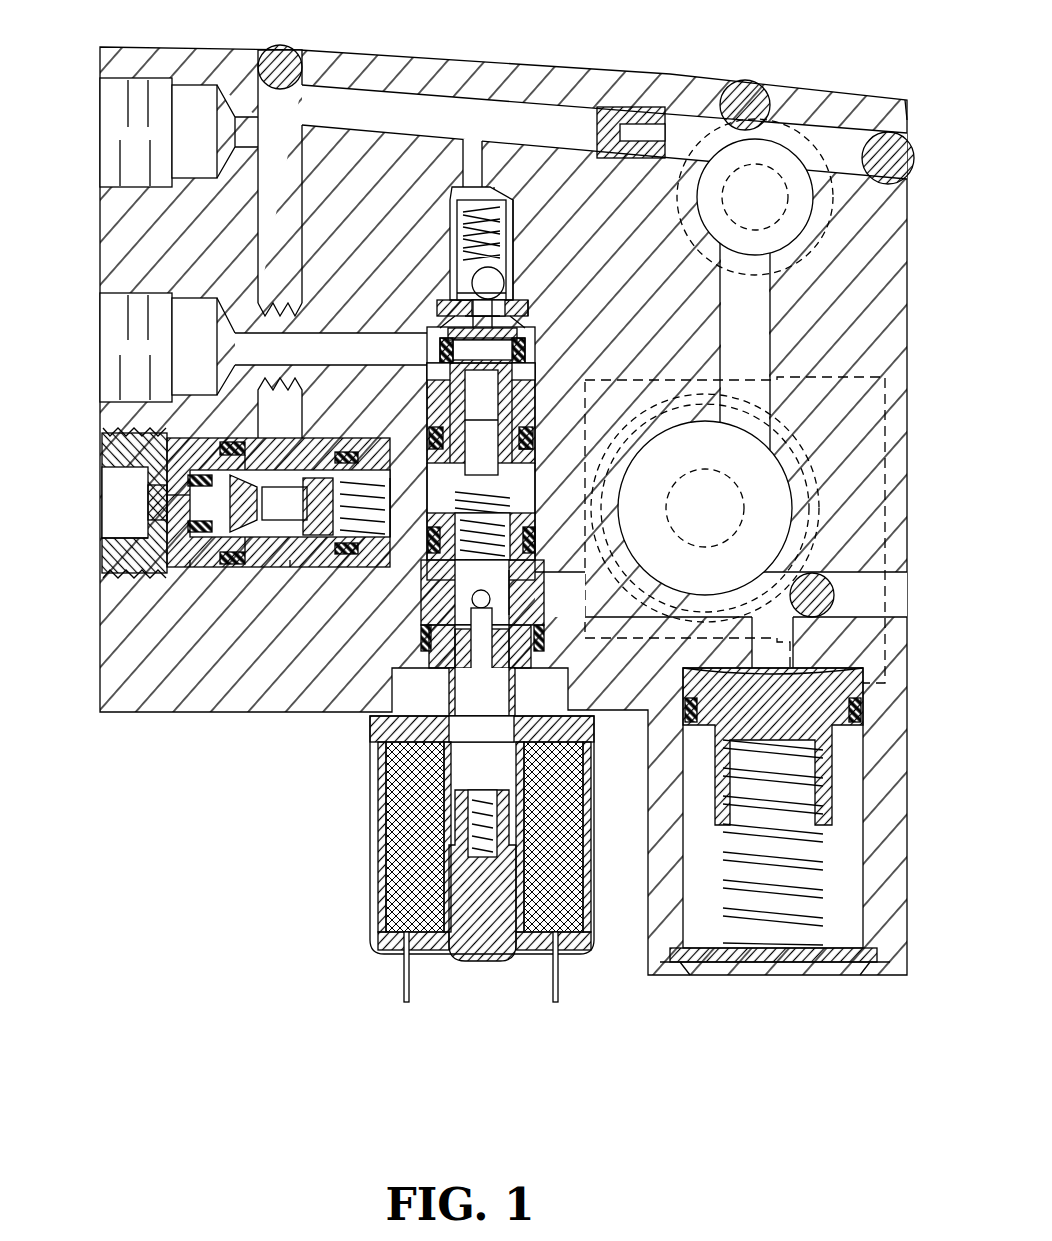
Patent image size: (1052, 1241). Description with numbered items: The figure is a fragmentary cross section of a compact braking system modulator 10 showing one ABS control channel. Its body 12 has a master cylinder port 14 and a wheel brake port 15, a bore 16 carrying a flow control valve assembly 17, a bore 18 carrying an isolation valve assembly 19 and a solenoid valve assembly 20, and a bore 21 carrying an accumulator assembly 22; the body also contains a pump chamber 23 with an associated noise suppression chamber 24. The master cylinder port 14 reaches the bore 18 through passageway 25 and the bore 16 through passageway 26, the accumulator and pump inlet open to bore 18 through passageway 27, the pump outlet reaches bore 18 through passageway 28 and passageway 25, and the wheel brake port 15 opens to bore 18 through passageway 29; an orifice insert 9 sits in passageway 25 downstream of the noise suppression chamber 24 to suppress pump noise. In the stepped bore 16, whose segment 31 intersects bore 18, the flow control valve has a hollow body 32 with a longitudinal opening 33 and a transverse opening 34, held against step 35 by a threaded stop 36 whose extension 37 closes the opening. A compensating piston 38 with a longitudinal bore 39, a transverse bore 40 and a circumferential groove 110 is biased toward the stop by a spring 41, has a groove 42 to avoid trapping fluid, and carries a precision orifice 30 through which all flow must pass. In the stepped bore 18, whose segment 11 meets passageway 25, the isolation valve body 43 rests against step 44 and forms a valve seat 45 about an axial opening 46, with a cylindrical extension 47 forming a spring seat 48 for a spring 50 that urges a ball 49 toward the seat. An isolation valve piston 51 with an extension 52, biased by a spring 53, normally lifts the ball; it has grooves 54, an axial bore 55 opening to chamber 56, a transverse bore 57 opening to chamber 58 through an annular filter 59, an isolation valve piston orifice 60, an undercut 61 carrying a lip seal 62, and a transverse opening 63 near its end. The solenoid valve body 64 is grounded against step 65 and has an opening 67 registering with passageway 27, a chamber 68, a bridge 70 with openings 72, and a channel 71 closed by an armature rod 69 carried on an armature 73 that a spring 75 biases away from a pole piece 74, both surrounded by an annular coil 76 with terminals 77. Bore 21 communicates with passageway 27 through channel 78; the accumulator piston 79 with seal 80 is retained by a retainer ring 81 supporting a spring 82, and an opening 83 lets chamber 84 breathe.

The orifice insert 9 is at (645, 122).
The braking system modulator 10 is at (910, 124).
The segment 11 is at (472, 150).
The body 12 is at (908, 292).
The master cylinder port 14 is at (128, 136).
The wheel brake port 15 is at (136, 388).
The bore 16 is at (190, 568).
The flow control valve assembly 17 is at (142, 470).
The bore 18 is at (451, 675).
The isolation valve assembly 19 is at (540, 362).
The solenoid valve assembly 20 is at (390, 694).
The bore 21 is at (860, 852).
The accumulator assembly 22 is at (814, 806).
The pump chamber 23 is at (705, 508).
The noise suppression chamber 24 is at (755, 197).
The passageway 25 is at (385, 110).
The passageway 26 is at (292, 128).
The passageway 27 is at (626, 617).
The passageway 28 is at (765, 350).
The passageway 29 is at (330, 345).
The precision orifice 30 is at (287, 470).
The segment 31 is at (428, 526).
The hollow body 32 is at (140, 572).
The longitudinal opening 33 is at (130, 496).
The transverse opening 34 is at (244, 545).
The step 35 is at (355, 540).
The stop 36 is at (140, 556).
The extension 37 is at (200, 534).
The compensating piston 38 is at (290, 536).
The longitudinal bore 39 is at (262, 482).
The transverse bore 40 is at (300, 492).
The spring 41 is at (352, 480).
The groove 42 is at (200, 488).
The body 43 is at (526, 304).
The step 44 is at (470, 300).
The valve seat 45 is at (478, 292).
The axial opening 46 is at (520, 308).
The cylindrical extension 47 is at (513, 232).
The spring seat 48 is at (494, 212).
The ball 49 is at (492, 280).
The spring 50 is at (468, 205).
The isolation valve piston 51 is at (538, 400).
The extension 52 is at (462, 310).
The spring 53 is at (497, 496).
The grooves 54 is at (452, 318).
The axial bore 55 is at (481, 436).
The chamber 56 is at (497, 521).
The transverse bore 57 is at (447, 380).
The chamber 58 is at (520, 322).
The annular filter 59 is at (444, 350).
The isolation valve piston orifice 60 is at (481, 422).
The undercut 61 is at (535, 432).
The isolation valve lip seal 62 is at (528, 442).
The transverse opening 63 is at (434, 436).
The body 64 is at (500, 478).
The step 65 is at (560, 660).
The opening 67 is at (440, 600).
The chamber 68 is at (440, 640).
The armature rod 69 is at (480, 670).
The bridge 70 is at (500, 562).
The channel 71 is at (472, 600).
The openings 72 is at (512, 598).
The armature 73 is at (460, 770).
The pole piece 74 is at (492, 960).
The spring 75 is at (482, 860).
The annular coil 76 is at (560, 822).
The terminals 77 is at (558, 985).
The channel 78 is at (790, 642).
The piston 79 is at (850, 735).
The seal 80 is at (860, 706).
The retainer ring 81 is at (845, 962).
The spring 82 is at (823, 777).
The opening 83 is at (745, 962).
The chamber 84 is at (700, 968).
The circumferential groove 110 is at (290, 570).